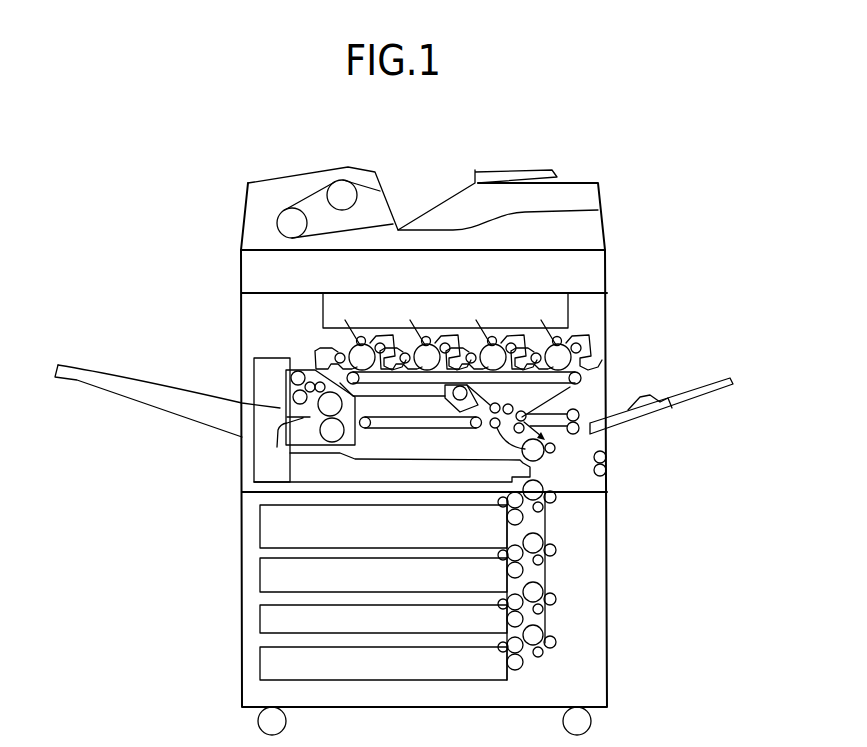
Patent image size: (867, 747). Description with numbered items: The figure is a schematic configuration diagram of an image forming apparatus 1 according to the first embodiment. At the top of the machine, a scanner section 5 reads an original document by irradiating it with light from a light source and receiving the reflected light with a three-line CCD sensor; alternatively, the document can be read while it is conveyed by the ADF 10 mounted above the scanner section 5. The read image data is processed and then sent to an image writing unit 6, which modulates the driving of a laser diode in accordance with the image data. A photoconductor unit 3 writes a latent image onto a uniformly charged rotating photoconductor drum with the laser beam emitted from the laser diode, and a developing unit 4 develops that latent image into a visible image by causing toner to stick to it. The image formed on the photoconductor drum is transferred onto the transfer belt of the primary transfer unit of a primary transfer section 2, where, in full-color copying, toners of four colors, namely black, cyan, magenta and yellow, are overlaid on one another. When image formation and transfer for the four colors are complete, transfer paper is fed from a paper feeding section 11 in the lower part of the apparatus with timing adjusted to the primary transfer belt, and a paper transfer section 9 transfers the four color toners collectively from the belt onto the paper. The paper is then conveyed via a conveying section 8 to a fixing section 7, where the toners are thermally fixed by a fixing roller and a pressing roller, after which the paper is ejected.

The image forming apparatus 1 is at (624, 172).
The primary transfer section 2 is at (557, 383).
The photoconductor unit 3 is at (567, 338).
The developing unit 4 is at (427, 314).
The scanner section 5 is at (270, 268).
The image writing unit 6 is at (343, 340).
The fixing section 7 is at (333, 405).
The conveying section 8 is at (387, 433).
The paper transfer section 9 is at (548, 452).
The ADF 10 is at (335, 192).
The paper feeding section 11 is at (547, 542).